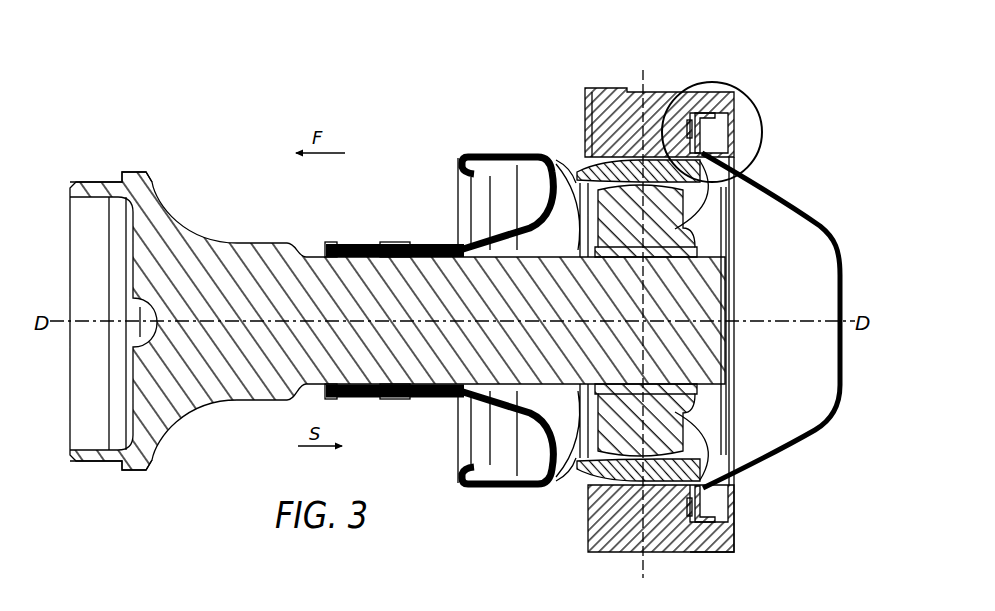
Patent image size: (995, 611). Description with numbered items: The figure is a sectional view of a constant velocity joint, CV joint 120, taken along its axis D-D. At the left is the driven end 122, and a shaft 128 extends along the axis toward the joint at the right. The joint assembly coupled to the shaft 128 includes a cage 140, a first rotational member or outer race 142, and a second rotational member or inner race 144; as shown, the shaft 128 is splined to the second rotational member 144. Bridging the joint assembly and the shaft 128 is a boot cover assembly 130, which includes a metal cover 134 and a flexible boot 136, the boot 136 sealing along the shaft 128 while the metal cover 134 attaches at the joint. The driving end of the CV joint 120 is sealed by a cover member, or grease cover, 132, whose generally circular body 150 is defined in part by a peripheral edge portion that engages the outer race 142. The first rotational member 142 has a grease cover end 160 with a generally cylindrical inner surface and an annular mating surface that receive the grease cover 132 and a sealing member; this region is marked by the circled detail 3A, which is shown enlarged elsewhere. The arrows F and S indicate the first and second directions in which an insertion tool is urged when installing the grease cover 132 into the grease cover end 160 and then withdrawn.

The CV joint 120 is at (441, 84).
The driven end 122 is at (124, 170).
The shaft 128 is at (248, 256).
The boot cover assembly 130 is at (494, 511).
The grease cover 132 is at (846, 246).
The metal cover 134 is at (542, 490).
The flexible boot 136 is at (415, 400).
The cage 140 is at (700, 222).
The first rotational member or outer race 142 is at (653, 92).
The second rotational member or inner race 144 is at (743, 465).
The circular body 150 is at (820, 427).
The grease cover end 160 is at (743, 534).
The detail view 3A is at (711, 83).